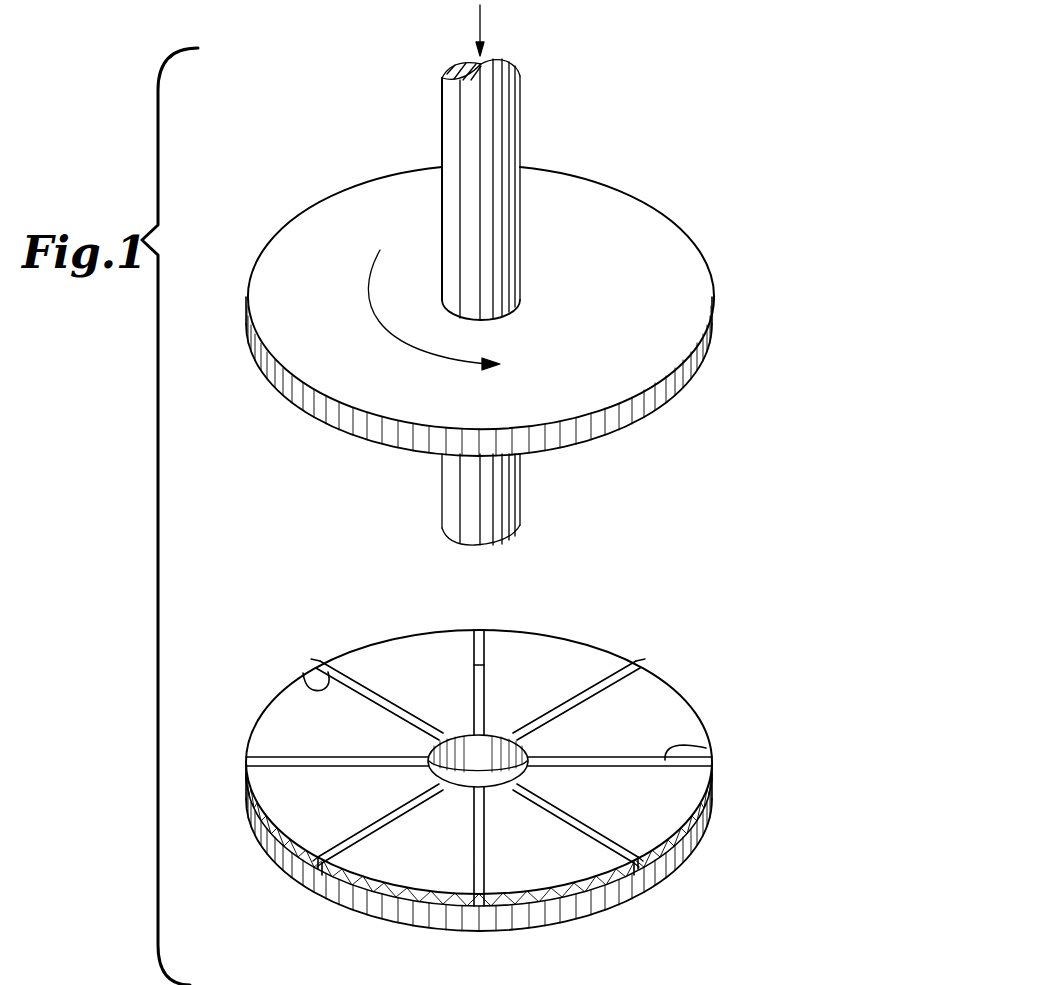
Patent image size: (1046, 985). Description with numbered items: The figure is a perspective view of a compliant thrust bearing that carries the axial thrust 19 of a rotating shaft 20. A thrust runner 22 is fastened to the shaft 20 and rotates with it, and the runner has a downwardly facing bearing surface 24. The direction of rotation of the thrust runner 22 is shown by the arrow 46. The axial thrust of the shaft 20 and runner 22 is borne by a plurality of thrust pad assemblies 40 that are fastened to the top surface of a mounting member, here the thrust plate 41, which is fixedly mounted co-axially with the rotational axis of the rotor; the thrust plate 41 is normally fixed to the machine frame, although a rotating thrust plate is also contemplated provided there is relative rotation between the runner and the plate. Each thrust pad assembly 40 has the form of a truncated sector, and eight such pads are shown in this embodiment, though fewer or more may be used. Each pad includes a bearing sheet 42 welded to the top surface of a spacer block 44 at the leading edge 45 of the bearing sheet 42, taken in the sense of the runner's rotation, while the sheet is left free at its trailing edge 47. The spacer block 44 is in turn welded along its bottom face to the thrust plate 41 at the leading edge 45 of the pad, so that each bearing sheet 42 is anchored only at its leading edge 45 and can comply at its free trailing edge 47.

The axial thrust 19 is at (483, 17).
The rotating shaft 20 is at (448, 118).
The thrust runner 22 is at (690, 226).
The bearing surface 24 is at (612, 437).
The arrow 46 is at (376, 328).
The thrust pad assembly 40 is at (615, 652).
The thrust plate 41 is at (285, 858).
The bearing sheet 42 is at (421, 648).
The spacer block 44 is at (320, 864).
The leading edge 45 is at (488, 663).
The trailing edge 47 is at (303, 672).